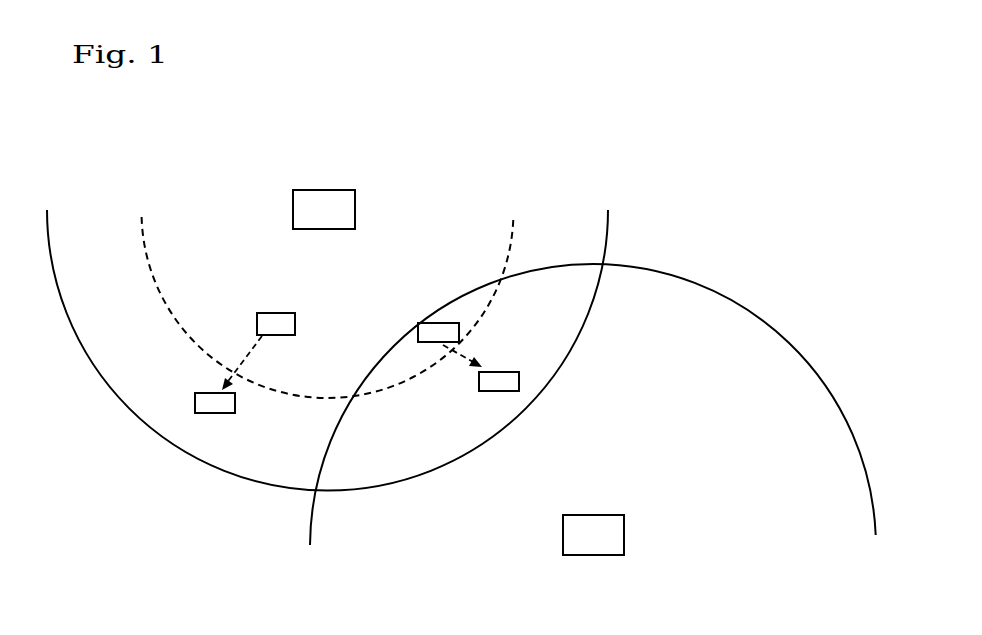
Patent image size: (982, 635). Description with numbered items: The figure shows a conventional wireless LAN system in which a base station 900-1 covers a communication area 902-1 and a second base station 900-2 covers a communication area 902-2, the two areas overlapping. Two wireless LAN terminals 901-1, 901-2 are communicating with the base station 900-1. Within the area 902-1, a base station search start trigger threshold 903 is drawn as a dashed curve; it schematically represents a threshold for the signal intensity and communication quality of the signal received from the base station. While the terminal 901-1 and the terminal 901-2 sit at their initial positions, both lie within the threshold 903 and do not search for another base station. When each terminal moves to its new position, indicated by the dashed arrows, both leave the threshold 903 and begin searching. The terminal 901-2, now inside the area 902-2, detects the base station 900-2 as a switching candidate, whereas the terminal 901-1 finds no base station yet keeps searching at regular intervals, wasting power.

The base station 900-1 is at (370, 185).
The base station 900-2 is at (669, 518).
The terminal 901-1 is at (274, 346).
The terminal 901-2 is at (438, 327).
The communication area 902-1 is at (396, 339).
The communication area 902-2 is at (593, 390).
The threshold 903 is at (351, 278).